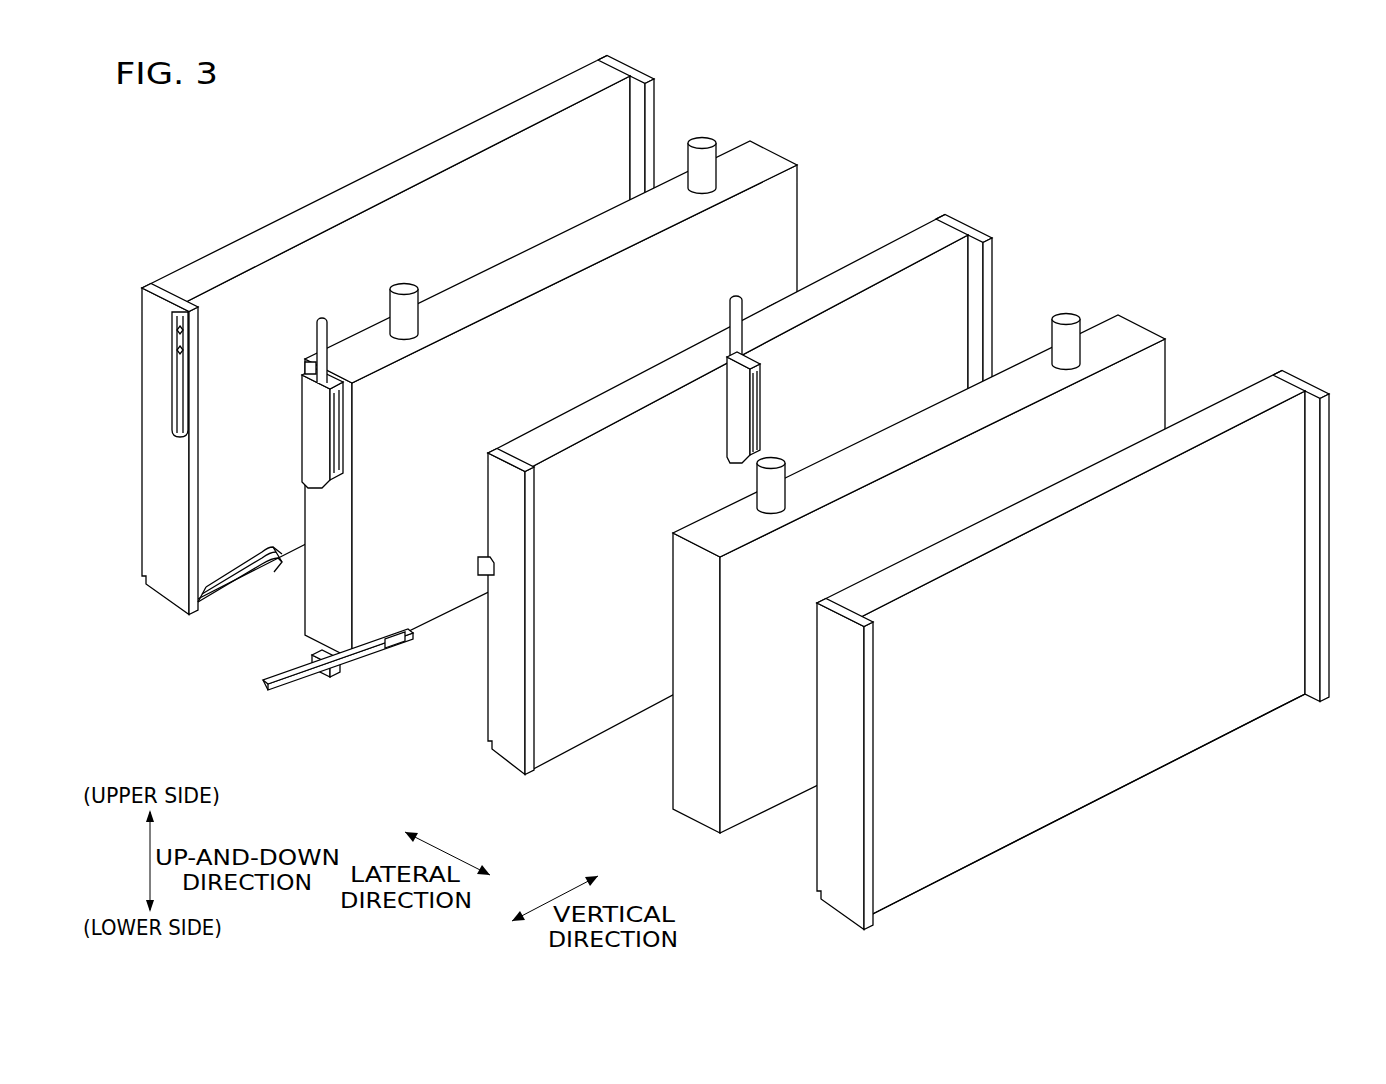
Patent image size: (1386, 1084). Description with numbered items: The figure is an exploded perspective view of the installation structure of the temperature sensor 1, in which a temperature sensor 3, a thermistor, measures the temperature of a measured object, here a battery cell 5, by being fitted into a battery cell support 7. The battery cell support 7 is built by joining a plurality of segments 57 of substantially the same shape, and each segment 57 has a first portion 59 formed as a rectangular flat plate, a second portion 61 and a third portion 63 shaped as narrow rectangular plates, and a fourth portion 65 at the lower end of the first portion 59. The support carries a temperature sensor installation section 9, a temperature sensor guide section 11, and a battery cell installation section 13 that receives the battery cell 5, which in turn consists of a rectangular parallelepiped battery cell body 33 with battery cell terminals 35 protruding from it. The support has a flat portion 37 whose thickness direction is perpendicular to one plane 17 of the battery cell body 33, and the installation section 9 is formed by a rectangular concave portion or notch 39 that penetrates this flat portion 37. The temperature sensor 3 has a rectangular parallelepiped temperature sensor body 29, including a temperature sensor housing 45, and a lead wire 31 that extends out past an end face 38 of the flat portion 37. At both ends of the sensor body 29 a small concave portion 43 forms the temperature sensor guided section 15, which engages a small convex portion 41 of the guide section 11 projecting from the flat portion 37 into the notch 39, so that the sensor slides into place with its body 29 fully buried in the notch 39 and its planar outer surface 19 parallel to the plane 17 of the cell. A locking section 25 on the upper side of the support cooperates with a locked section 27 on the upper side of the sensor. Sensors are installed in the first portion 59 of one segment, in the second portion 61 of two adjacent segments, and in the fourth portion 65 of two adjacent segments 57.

The installation structure of the temperature sensor 1 is at (760, 492).
The temperature sensor 3 is at (539, 523).
The measured object (battery cell) 5 is at (772, 399).
The battery cell support 7 is at (760, 492).
The temperature sensor installation section 9 is at (515, 570).
The temperature sensor guide section 11 is at (332, 488).
The battery cell installation section 13 is at (503, 148).
The temperature sensor guided section 15 is at (383, 536).
The one plane of the battery cell 17 is at (597, 262).
The planar outer surface of the temperature sensor 19 is at (722, 405).
The locking section 25 is at (182, 300).
The locked section 27 is at (340, 385).
The temperature sensor body 29 is at (486, 536).
The lead wire 31 is at (317, 340).
The battery cell body 33 is at (785, 489).
The battery cell terminals 35 is at (702, 148).
The flat portion 37 is at (380, 207).
The end face 38 is at (775, 308).
The concave portion (notch) 39 is at (515, 570).
The convex portion 41 is at (189, 390).
The concave portion of the sensor body 43 is at (343, 410).
The temperature sensor housing 45 is at (345, 438).
The segment 57 is at (255, 245).
The first portion 59 is at (343, 225).
The second portion 61 is at (165, 600).
The third portion 63 is at (867, 386).
The fourth portion 65 is at (268, 548).